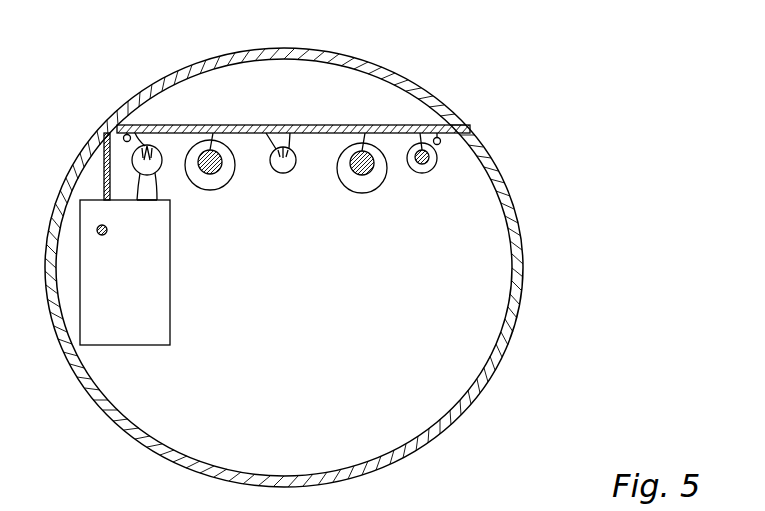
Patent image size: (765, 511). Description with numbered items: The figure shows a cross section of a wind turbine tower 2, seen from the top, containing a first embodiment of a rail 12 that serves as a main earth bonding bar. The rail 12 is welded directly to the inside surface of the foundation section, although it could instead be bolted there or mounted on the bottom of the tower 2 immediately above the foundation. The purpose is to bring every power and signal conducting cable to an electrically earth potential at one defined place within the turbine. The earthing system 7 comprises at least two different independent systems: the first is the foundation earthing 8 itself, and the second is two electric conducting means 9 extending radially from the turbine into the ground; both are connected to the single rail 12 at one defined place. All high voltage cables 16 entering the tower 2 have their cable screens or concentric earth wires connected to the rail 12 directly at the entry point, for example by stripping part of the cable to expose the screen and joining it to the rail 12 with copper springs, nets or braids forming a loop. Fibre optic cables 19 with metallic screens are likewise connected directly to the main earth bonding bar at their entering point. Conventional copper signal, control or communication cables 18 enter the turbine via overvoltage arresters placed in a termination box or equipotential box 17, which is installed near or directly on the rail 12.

The wind turbine tower 2 is at (500, 168).
The earthing system 7 is at (170, 99).
The foundation earthing 8 is at (123, 135).
The electric conducting means 9 is at (452, 137).
The rail 12 is at (247, 125).
The high voltage cable 16 is at (207, 178).
The termination box/equipotential box 17 is at (127, 315).
The copper signal-, control- or communication cable 18 is at (133, 178).
The fibre optic cable 19 is at (305, 137).